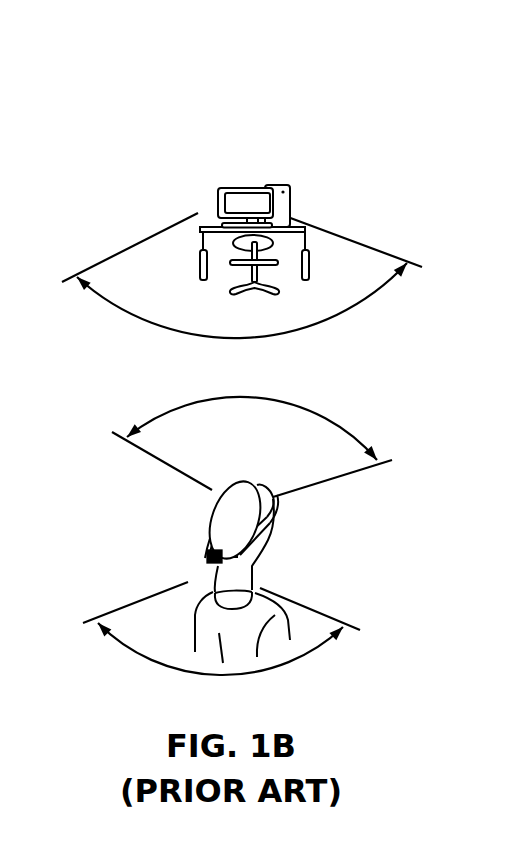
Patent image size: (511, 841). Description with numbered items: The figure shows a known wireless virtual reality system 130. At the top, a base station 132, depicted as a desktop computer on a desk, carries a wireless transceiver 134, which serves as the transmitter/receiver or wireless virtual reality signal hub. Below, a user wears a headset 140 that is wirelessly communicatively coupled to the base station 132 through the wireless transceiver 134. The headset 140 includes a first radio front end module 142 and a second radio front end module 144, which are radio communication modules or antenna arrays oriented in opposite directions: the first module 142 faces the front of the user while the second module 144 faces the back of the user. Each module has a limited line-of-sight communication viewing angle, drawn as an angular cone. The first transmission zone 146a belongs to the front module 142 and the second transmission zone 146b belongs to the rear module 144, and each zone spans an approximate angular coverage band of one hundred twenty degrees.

The wireless virtual reality system 130 is at (397, 83).
The base station 132 is at (277, 188).
The wireless transceiver 134 is at (237, 188).
The headset 140 is at (276, 509).
The first radio front end module 142 is at (253, 481).
The second radio front end module 144 is at (207, 555).
The first transmission zone 146a is at (340, 423).
The second transmission zone 146b is at (313, 625).